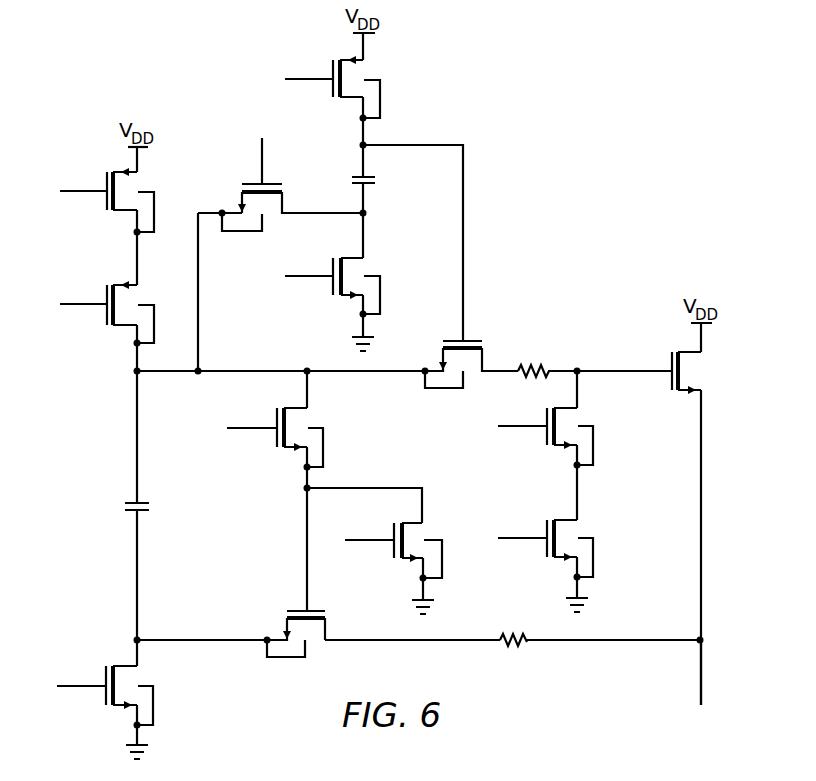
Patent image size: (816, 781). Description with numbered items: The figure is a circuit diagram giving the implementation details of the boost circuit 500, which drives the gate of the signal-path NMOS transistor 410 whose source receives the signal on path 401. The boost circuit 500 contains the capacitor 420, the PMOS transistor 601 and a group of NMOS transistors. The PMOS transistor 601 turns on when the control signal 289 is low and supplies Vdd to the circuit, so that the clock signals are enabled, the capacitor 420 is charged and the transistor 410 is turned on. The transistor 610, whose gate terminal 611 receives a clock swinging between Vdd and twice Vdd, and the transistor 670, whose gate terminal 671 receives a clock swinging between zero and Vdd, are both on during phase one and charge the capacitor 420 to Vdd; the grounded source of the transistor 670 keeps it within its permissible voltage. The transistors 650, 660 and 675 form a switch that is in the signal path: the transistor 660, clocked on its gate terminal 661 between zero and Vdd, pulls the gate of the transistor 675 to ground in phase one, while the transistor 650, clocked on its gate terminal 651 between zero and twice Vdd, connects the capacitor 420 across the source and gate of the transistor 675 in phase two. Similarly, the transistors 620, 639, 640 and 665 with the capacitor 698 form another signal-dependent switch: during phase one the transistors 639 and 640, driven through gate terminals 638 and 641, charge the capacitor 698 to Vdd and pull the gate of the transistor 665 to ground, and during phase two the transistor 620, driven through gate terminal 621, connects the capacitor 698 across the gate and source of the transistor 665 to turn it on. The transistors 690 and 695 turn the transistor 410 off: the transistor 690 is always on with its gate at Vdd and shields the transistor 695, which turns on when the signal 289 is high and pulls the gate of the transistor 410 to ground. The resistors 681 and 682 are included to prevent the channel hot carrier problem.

The boost circuit 500 is at (562, 105).
The PMOS transistor 601 is at (107, 180).
The control signal path 289 is at (80, 197).
The NMOS transistor 610 is at (107, 292).
The gate terminal of transistor 610 611 is at (80, 308).
The gate terminal of transistor 639 638 is at (312, 78).
The NMOS transistor 639 is at (327, 93).
The NMOS transistor 620 is at (280, 182).
The gate terminal of transistor 620 621 is at (262, 157).
The capacitor 698 is at (380, 183).
The NMOS transistor 640 is at (332, 260).
The gate terminal of transistor 640 641 is at (307, 278).
The NMOS transistor 665 is at (477, 338).
The resistor 681 is at (533, 363).
The NMOS transistor 410 is at (670, 357).
The signal path 401 is at (702, 672).
The NMOS transistor 690 is at (543, 440).
The NMOS transistor 695 is at (545, 525).
The NMOS transistor 650 is at (275, 413).
The gate terminal of transistor 650 651 is at (248, 430).
The NMOS transistor 660 is at (392, 525).
The gate terminal of transistor 660 661 is at (367, 542).
The NMOS transistor 675 is at (293, 607).
The resistor 682 is at (513, 645).
The capacitor 420 is at (123, 508).
The NMOS transistor 670 is at (103, 672).
The gate terminal of transistor 670 671 is at (80, 690).